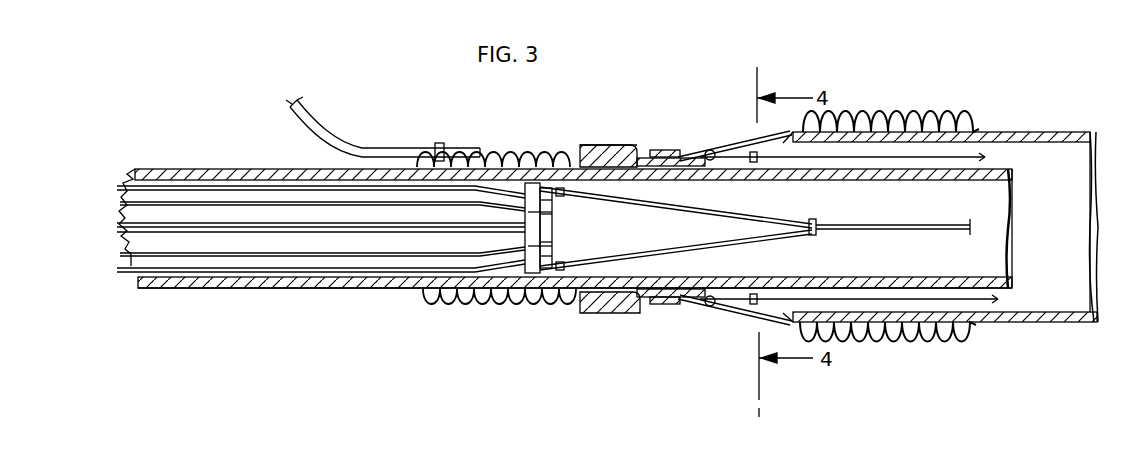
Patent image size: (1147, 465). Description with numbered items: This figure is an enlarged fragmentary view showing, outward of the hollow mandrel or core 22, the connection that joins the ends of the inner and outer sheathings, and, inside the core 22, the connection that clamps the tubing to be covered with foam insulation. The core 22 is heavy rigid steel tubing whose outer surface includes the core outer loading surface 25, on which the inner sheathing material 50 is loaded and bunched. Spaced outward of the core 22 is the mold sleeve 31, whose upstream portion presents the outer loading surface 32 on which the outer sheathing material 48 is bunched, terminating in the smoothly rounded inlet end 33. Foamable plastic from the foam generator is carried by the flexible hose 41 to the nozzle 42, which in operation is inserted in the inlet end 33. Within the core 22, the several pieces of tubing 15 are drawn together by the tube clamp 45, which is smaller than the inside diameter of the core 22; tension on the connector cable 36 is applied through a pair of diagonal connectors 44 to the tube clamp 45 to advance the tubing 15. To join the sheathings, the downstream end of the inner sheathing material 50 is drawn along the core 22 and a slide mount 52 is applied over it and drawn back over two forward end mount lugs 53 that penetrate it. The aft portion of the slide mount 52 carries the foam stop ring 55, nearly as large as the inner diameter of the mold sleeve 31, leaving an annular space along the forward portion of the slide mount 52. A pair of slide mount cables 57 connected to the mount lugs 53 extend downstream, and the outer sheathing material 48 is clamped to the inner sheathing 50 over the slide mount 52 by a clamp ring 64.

The tubing 15 is at (116, 204).
The mandrel or core 22 is at (833, 182).
The core outer loading surface 25 is at (358, 289).
The mold sleeve 31 is at (1100, 184).
The outer loading surface 32 is at (1034, 132).
The inlet end 33 is at (786, 134).
The connector cable 36 is at (897, 228).
The flexible hose 41 is at (333, 135).
The nozzle 42 is at (447, 143).
The diagonal connectors 44 is at (730, 214).
The tube clamp 45 is at (533, 214).
The outer sheathing material 48 is at (924, 111).
The inner sheathing material 50 is at (516, 156).
The slide mount 52 is at (578, 145).
The forward end mount lugs 53 is at (700, 150).
The foam stop ring 55 is at (610, 145).
The slide mount cables 57 is at (988, 157).
The clamp ring 64 is at (660, 150).